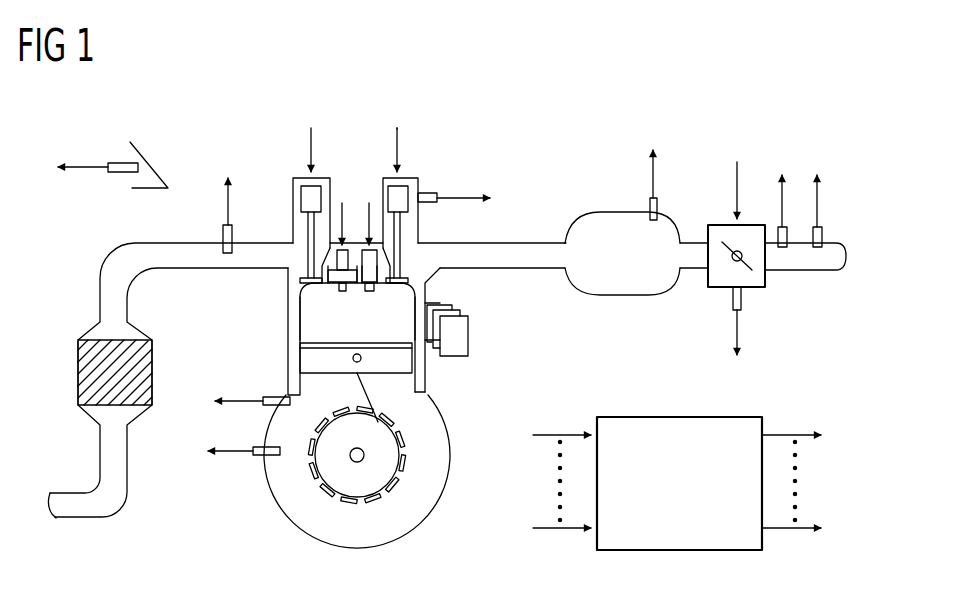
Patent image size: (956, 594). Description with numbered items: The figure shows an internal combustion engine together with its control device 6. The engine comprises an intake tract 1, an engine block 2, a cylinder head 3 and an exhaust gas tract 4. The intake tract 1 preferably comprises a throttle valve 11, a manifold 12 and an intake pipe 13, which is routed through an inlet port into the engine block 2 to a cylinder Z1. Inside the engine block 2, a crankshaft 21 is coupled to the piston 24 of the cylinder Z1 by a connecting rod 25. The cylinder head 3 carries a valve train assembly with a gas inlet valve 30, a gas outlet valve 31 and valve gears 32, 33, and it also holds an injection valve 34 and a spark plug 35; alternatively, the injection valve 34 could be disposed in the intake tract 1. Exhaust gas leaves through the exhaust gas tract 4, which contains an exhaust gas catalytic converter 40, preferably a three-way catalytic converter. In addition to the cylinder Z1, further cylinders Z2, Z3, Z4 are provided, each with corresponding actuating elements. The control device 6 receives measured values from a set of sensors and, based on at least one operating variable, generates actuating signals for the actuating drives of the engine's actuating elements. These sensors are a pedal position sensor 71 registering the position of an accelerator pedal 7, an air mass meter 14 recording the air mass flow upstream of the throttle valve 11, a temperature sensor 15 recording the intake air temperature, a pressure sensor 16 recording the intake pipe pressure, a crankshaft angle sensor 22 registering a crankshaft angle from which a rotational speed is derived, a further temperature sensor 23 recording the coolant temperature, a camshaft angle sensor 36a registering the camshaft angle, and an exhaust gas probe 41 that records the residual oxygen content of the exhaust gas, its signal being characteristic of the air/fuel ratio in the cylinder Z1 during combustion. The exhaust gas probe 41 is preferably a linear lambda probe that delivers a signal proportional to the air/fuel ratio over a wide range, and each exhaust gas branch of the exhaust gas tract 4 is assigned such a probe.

The intake tract 1 is at (630, 310).
The engine block 2 is at (268, 331).
The cylinder head 3 is at (412, 126).
The exhaust gas tract 4 is at (86, 299).
The control device 6 is at (680, 415).
The accelerator pedal 7 is at (152, 168).
The throttle valve 11 is at (722, 277).
The manifold 12 is at (600, 225).
The intake pipe 13 is at (523, 248).
The air mass meter 14 is at (818, 248).
The temperature sensor 15 is at (783, 248).
The pressure sensor 16 is at (660, 208).
The crankshaft 21 is at (357, 462).
The crankshaft angle sensor 22 is at (262, 458).
The further temperature sensor 23 is at (270, 397).
The piston 24 is at (380, 362).
The connecting rod 25 is at (357, 380).
The gas inlet valve 30 is at (397, 285).
The gas outlet valve 31 is at (298, 292).
The valve gear 32 is at (388, 183).
The valve gear 33 is at (298, 192).
The injection valve 34 is at (365, 290).
The spark plug 35 is at (338, 290).
The camshaft angle sensor 36a is at (432, 190).
The exhaust gas catalytic converter 40 is at (80, 366).
The exhaust gas probe 41 is at (222, 232).
The pedal position sensor 71 is at (118, 162).
The cylinder Z1 is at (420, 355).
The further cylinder Z2 is at (462, 333).
The further cylinder Z3 is at (462, 320).
The further cylinder Z4 is at (455, 305).